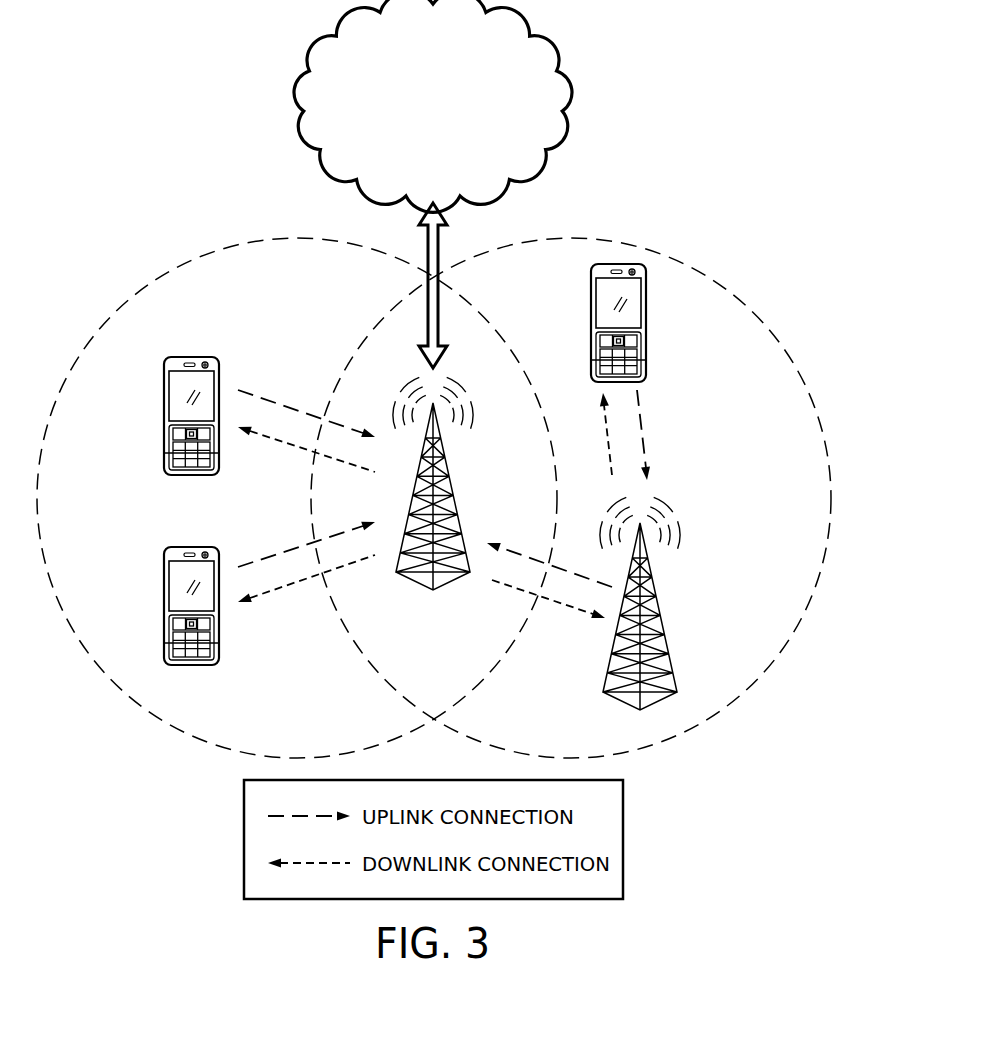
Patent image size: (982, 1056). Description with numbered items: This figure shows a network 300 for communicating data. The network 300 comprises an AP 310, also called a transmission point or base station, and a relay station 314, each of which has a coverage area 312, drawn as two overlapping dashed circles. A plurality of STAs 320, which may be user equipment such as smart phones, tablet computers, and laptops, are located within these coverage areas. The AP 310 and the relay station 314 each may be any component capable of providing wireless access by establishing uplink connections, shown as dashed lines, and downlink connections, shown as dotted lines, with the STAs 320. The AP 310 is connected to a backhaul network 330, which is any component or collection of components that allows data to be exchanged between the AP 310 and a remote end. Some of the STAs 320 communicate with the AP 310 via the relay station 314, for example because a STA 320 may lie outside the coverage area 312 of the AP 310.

The network 300 is at (198, 113).
The AP 310 is at (453, 498).
The coverage area 312 is at (124, 290).
The relay station 314 is at (662, 615).
The STAs 320 is at (164, 408).
The backhaul network 330 is at (458, 147).